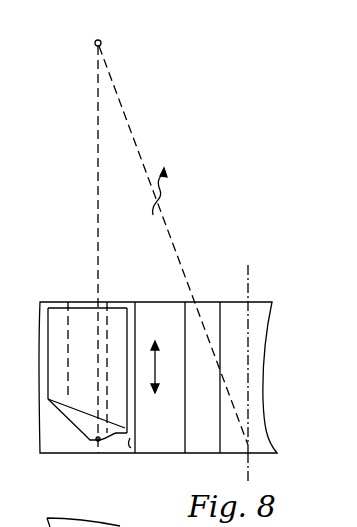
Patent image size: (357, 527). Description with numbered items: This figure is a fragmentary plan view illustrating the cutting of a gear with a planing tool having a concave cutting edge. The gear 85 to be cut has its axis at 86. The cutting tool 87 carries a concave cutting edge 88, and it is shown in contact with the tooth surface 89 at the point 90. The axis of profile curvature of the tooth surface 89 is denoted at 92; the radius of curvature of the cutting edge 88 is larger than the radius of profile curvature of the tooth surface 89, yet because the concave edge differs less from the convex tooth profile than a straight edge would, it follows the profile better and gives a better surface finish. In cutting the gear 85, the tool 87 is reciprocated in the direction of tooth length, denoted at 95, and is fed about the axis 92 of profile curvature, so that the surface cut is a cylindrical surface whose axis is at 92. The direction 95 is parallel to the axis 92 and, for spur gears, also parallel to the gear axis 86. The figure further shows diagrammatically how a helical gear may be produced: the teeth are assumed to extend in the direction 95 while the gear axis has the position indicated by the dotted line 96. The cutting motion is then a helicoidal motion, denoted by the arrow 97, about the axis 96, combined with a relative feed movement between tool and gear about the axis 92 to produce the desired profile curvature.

The gear 85 is at (261, 310).
The gear axis 86 is at (250, 462).
The cutting tool 87 is at (85, 424).
The concave cutting edge 88 is at (107, 438).
The tooth surface 89 is at (131, 448).
The point of contact 90 is at (98, 442).
The axis of profile curvature 92 is at (248, 400).
The direction of tooth length 95 is at (156, 369).
The helical gear axis 96 is at (169, 228).
The helicoidal motion arrow 97 is at (173, 191).